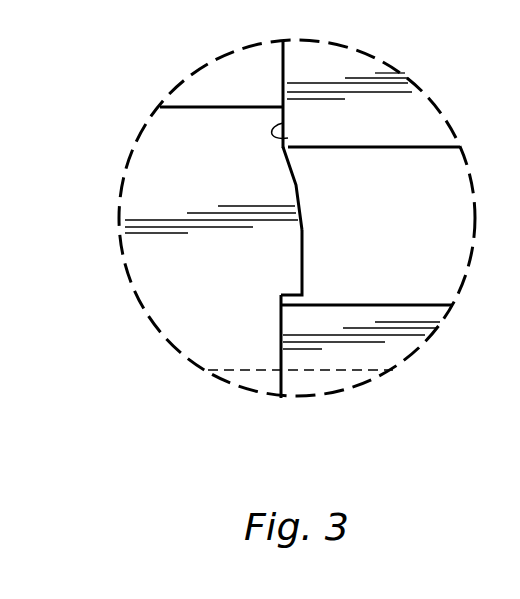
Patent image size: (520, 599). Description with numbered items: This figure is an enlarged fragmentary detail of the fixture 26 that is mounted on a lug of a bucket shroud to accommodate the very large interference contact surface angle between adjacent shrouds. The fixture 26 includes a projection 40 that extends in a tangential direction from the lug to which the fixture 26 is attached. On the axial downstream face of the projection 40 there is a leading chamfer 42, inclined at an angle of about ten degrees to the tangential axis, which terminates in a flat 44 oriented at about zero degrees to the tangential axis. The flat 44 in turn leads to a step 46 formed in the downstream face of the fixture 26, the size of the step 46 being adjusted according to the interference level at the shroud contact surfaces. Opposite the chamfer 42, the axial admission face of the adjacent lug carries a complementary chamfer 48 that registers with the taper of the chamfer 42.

The fixture 26 is at (198, 303).
The projection 40 is at (183, 153).
The leading chamfer 42 is at (295, 180).
The flat 44 is at (302, 263).
The step 46 is at (283, 326).
The chamfer 48 is at (288, 138).